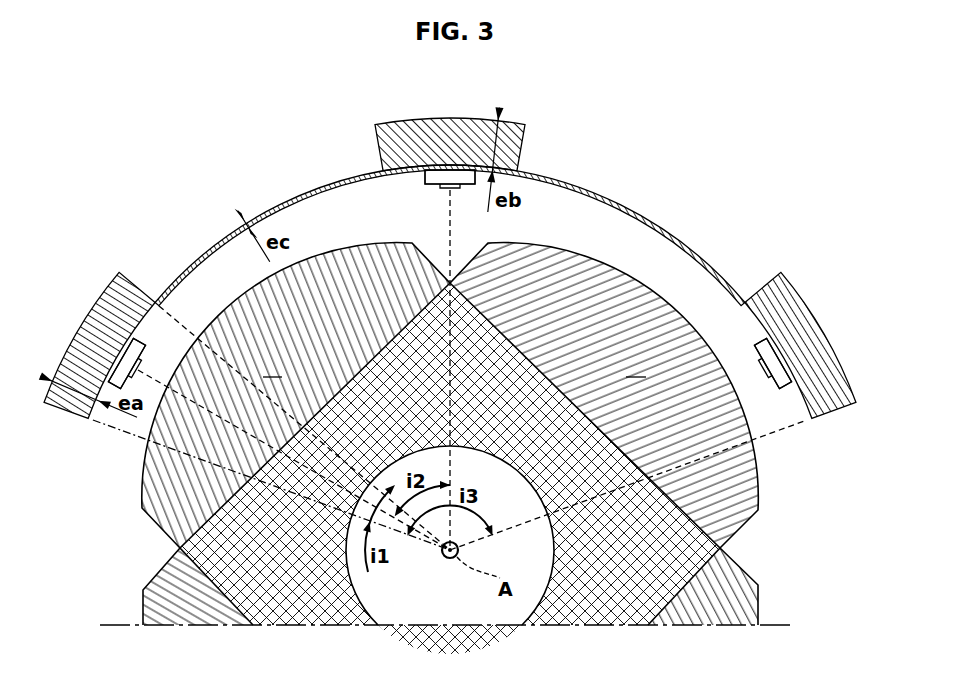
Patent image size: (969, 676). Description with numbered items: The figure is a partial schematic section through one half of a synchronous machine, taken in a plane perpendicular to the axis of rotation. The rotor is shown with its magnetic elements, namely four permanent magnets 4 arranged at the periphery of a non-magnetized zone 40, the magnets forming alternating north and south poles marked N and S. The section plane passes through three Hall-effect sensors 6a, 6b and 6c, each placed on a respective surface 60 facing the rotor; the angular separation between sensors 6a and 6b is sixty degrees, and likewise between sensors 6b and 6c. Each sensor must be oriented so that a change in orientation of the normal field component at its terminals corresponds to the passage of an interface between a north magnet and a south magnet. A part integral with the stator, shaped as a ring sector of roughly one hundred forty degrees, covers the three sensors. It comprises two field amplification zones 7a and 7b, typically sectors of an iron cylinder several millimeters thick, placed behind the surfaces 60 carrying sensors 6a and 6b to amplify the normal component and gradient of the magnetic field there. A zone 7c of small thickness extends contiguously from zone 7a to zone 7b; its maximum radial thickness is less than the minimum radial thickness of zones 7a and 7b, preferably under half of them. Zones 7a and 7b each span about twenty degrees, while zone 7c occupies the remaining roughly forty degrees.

The permanent magnet 4 is at (133, 466).
The non-magnetized zone 40 is at (297, 564).
The Hall-effect sensor 6a is at (145, 361).
The Hall-effect sensor 6b is at (440, 191).
The Hall-effect sensor 6c is at (762, 363).
The field amplification zone 7a is at (121, 294).
The field amplification zone 7b is at (383, 150).
The small-thickness zone 7c is at (273, 210).
The surface 60 is at (452, 177).